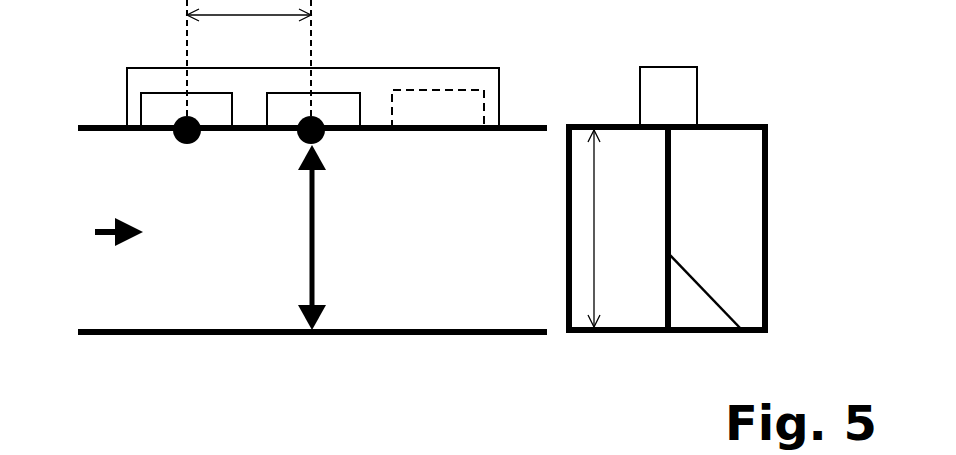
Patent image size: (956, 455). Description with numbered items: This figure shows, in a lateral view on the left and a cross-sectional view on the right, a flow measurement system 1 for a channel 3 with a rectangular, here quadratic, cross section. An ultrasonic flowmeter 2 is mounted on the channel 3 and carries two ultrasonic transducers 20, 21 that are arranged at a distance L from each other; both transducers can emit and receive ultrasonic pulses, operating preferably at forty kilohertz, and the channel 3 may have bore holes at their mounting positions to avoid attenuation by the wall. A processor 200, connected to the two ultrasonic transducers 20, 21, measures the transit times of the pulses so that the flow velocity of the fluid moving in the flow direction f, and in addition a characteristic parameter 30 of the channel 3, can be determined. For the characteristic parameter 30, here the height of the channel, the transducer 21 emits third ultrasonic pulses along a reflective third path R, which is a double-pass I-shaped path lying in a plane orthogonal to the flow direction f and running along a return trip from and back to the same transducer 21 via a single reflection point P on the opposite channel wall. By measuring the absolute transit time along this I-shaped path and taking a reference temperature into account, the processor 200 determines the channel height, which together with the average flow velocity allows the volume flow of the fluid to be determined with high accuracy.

The flow measurement system 1 is at (80, 42).
The ultrasonic flowmeter 2 is at (127, 98).
The channel 3 is at (120, 338).
The ultrasonic transducer 20 is at (155, 90).
The ultrasonic transducer 21 is at (297, 93).
The processor 200 is at (437, 88).
The characteristic parameter 30 is at (594, 233).
The distance L is at (249, 10).
The flow direction f is at (103, 230).
The reflective path R is at (317, 233).
The reflection point P is at (305, 337).